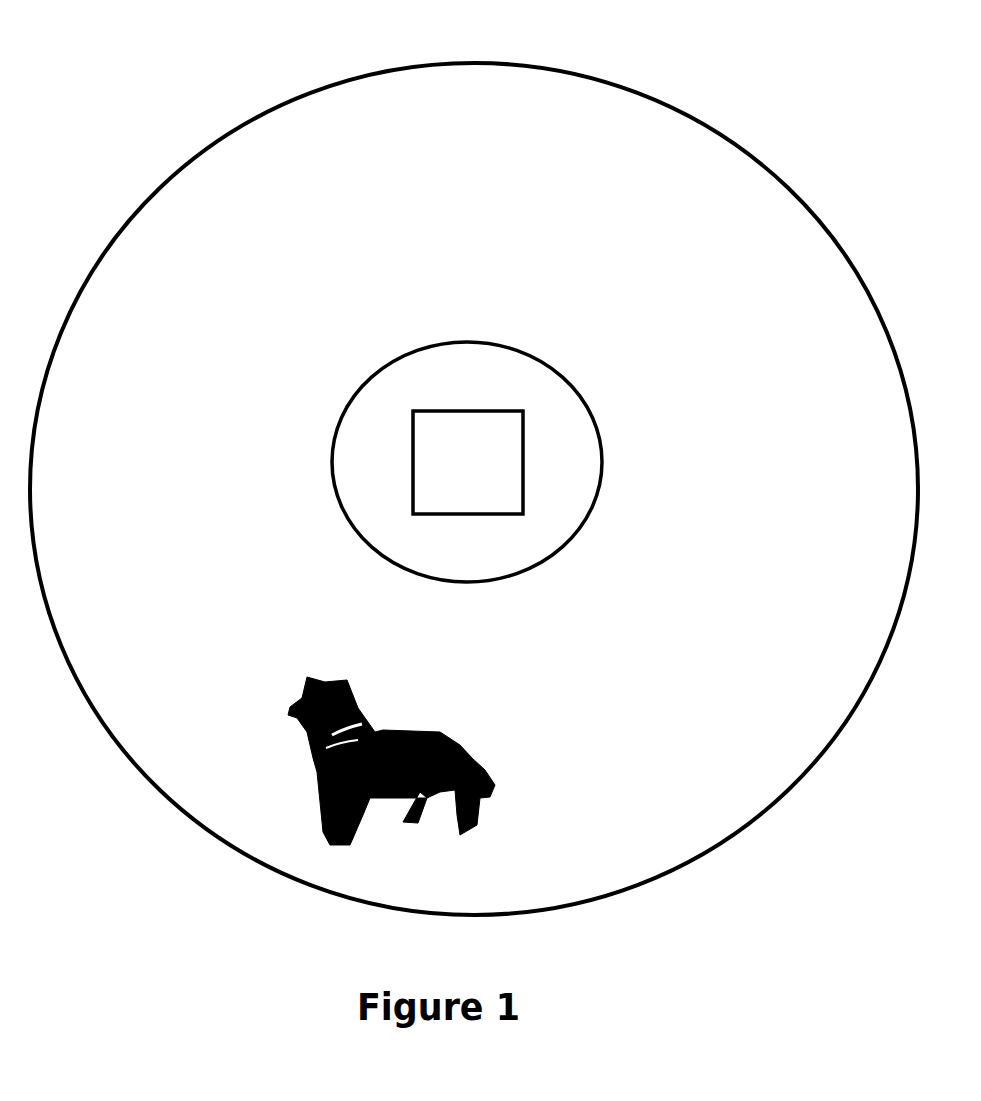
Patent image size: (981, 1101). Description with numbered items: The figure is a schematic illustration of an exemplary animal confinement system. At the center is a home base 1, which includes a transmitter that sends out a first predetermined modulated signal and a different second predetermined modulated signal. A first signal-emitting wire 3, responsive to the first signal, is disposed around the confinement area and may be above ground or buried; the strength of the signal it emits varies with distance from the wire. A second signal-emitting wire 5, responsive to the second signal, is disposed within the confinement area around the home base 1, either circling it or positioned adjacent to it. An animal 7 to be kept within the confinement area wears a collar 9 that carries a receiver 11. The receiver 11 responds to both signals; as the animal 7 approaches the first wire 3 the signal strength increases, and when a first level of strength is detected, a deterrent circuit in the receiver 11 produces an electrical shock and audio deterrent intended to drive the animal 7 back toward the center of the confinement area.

The home base 1 is at (416, 457).
The first signal-emitting wire 3 is at (263, 115).
The second signal-emitting wire 5 is at (535, 358).
The animal 7 is at (466, 758).
The collar 9 is at (362, 722).
The receiver 11 is at (306, 748).